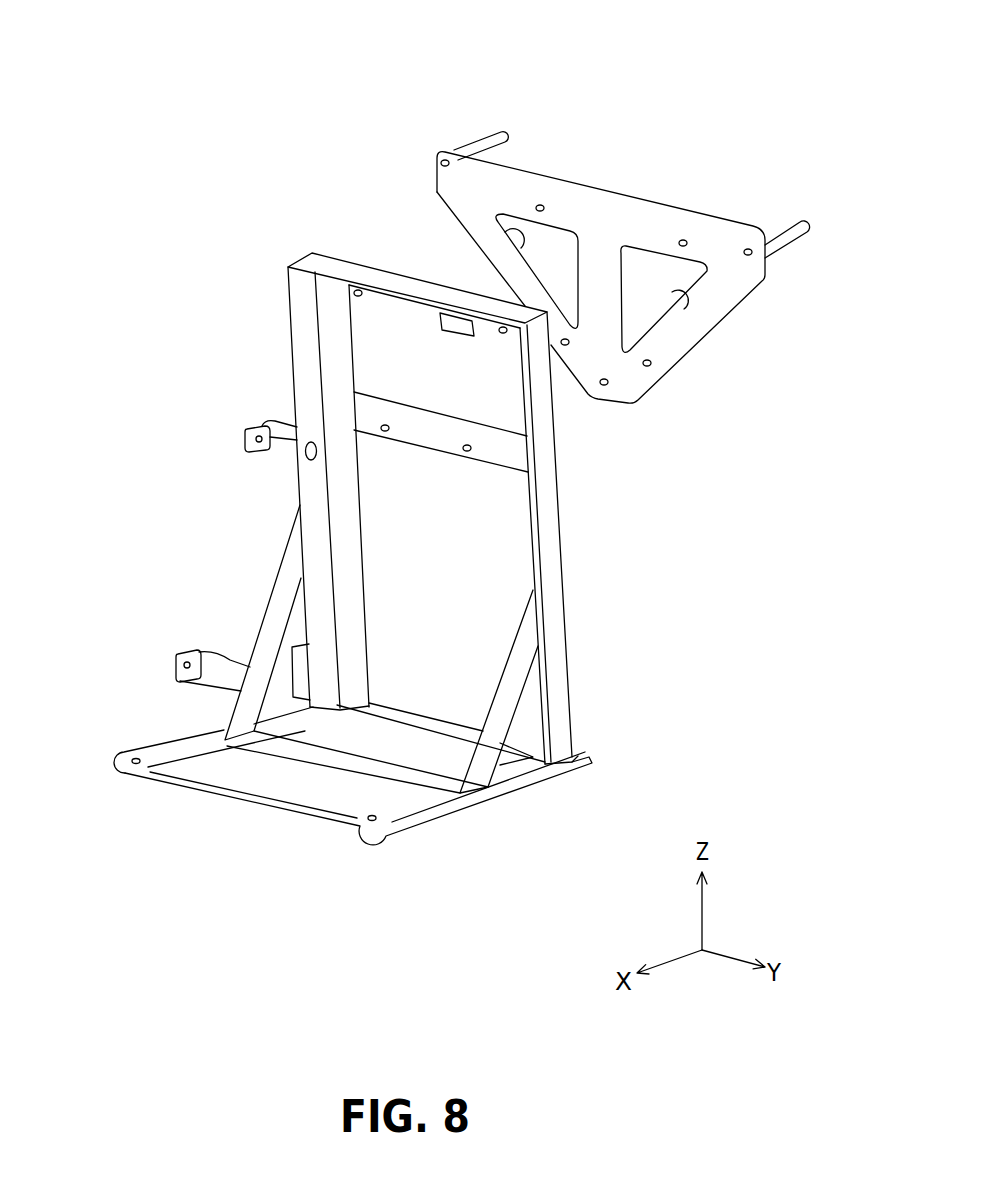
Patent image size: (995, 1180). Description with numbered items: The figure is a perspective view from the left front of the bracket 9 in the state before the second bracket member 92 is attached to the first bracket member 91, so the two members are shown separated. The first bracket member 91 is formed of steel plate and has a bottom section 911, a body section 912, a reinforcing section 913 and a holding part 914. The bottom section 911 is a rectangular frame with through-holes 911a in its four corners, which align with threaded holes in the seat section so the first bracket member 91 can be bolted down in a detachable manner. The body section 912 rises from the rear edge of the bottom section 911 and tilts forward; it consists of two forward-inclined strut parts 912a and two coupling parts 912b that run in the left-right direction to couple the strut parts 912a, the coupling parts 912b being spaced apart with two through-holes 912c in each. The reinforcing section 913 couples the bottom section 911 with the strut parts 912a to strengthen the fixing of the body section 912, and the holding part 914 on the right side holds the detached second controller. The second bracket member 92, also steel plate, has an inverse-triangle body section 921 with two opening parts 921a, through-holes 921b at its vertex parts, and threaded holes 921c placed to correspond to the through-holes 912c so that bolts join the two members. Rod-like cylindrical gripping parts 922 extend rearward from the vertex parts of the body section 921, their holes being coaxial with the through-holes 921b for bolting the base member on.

The bracket 9 is at (286, 97).
The first bracket member 91 is at (585, 527).
The bottom section 911 is at (267, 793).
The through-holes 911a is at (131, 757).
The body section 912 is at (568, 586).
The strut parts 912a is at (348, 572).
The coupling parts 912b is at (400, 307).
The through-holes 912c is at (497, 322).
The reinforcing section 913 is at (277, 605).
The holding part 914 is at (245, 433).
The second bracket member 92 is at (653, 183).
The body section 921 is at (612, 205).
The opening parts 921a is at (498, 231).
The through-holes 921b is at (443, 163).
The threaded holes 921c is at (540, 206).
The gripping parts 922 is at (480, 140).